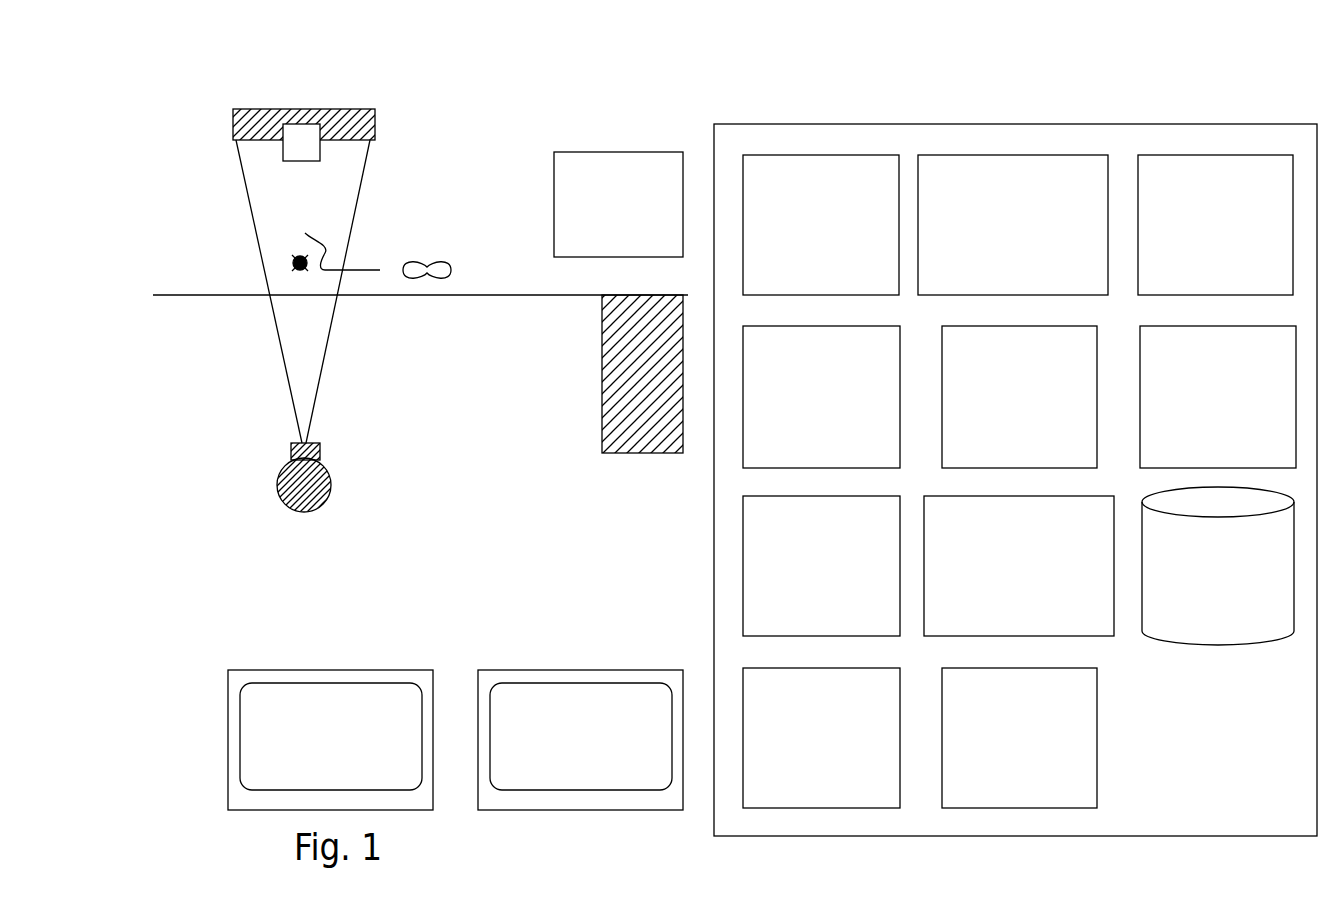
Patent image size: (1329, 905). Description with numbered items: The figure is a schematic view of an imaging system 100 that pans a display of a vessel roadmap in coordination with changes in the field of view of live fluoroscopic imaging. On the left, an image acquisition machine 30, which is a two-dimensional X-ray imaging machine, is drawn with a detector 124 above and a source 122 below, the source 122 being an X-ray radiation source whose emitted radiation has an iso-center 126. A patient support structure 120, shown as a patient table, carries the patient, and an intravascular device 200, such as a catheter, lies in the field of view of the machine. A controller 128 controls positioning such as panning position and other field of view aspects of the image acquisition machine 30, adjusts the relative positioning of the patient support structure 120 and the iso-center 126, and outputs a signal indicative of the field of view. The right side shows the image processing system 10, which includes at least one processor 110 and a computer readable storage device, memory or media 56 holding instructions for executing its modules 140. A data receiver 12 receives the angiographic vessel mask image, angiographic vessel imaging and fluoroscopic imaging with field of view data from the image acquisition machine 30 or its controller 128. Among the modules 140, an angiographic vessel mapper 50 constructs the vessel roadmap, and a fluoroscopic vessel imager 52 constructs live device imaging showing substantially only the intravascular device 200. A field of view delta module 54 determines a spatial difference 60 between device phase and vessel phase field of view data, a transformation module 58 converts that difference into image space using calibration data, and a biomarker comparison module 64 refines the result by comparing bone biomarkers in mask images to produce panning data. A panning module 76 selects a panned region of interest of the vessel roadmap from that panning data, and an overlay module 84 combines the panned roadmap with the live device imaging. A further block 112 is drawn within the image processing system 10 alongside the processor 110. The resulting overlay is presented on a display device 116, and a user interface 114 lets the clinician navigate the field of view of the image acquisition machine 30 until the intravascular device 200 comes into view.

The imaging system 100 is at (696, 58).
The image processing system 10 is at (896, 107).
The data receiver 12 is at (821, 225).
The angiographic vessel mapper 50 is at (1013, 225).
The fluoroscopic vessel imager 52 is at (1215, 225).
The field of view delta module 54 is at (821, 397).
The panning module 76 is at (1019, 397).
The overlay module 84 is at (1218, 397).
The biomarker comparison module 64 is at (821, 566).
The transformation module 58 is at (1019, 566).
The computer readable storage device, memory or media 56 is at (1218, 566).
The processor 110 is at (821, 738).
The output module 112 is at (1019, 738).
The modules 140 is at (1192, 678).
The controller 128 is at (618, 204).
The user interface 114 is at (330, 740).
The display device 116 is at (580, 740).
The patient support structure 120 is at (423, 295).
The detector 124 is at (233, 116).
The spatial difference 60 is at (303, 132).
The image acquisition machine 30 is at (240, 405).
The source 122 is at (330, 470).
The iso-center 126 is at (296, 259).
The intravascular device 200 is at (378, 270).